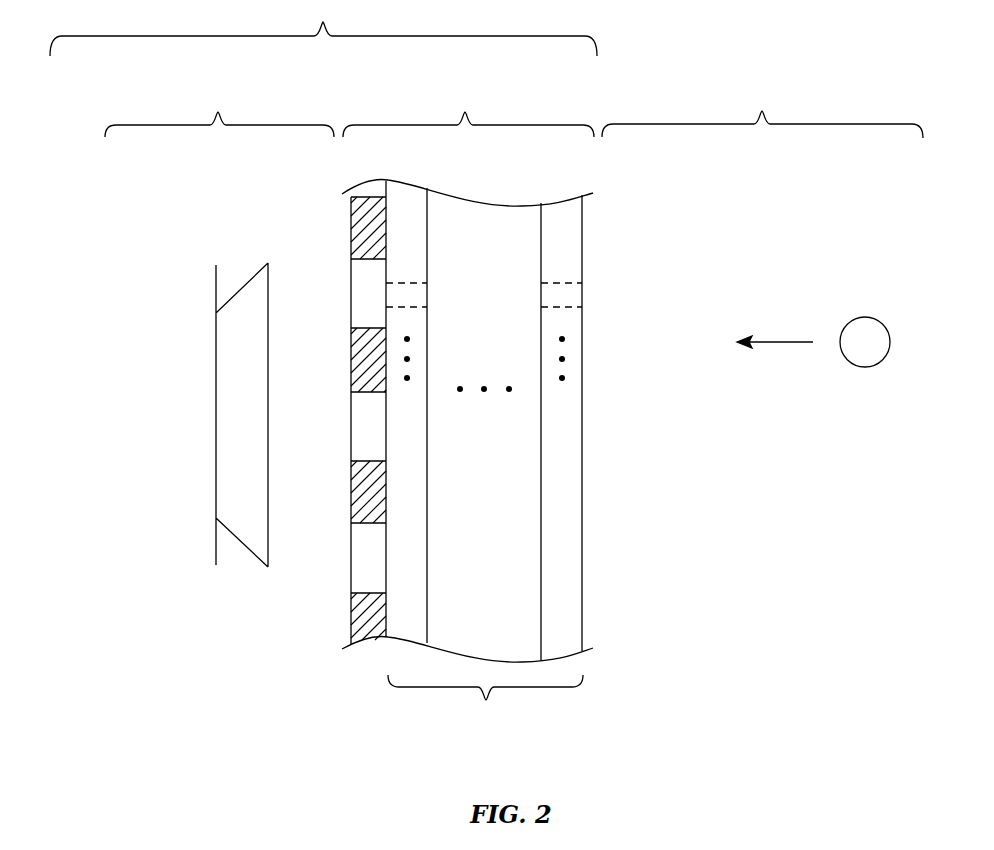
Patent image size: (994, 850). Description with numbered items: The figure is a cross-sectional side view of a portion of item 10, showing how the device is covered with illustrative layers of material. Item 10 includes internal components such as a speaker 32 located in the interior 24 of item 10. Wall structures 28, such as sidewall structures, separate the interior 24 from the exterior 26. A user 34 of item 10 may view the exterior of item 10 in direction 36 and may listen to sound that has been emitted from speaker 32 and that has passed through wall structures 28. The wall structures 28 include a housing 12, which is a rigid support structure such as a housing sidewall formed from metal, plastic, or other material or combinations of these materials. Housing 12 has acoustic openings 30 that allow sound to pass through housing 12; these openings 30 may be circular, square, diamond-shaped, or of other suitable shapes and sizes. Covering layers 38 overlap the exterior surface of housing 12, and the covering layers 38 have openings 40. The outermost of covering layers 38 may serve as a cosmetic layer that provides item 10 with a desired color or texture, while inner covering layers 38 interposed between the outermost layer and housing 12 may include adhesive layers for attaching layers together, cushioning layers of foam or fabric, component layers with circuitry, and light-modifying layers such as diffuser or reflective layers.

The item 10 is at (323, 28).
The housing 12 is at (368, 655).
The interior 24 is at (219, 114).
The exterior 26 is at (762, 114).
The wall structures 28 is at (468, 114).
The acoustic openings 30 is at (362, 428).
The speaker 32 is at (245, 522).
The user 34 is at (865, 367).
The direction 36 is at (787, 343).
The covering layers 38 is at (485, 699).
The openings 40 is at (408, 282).